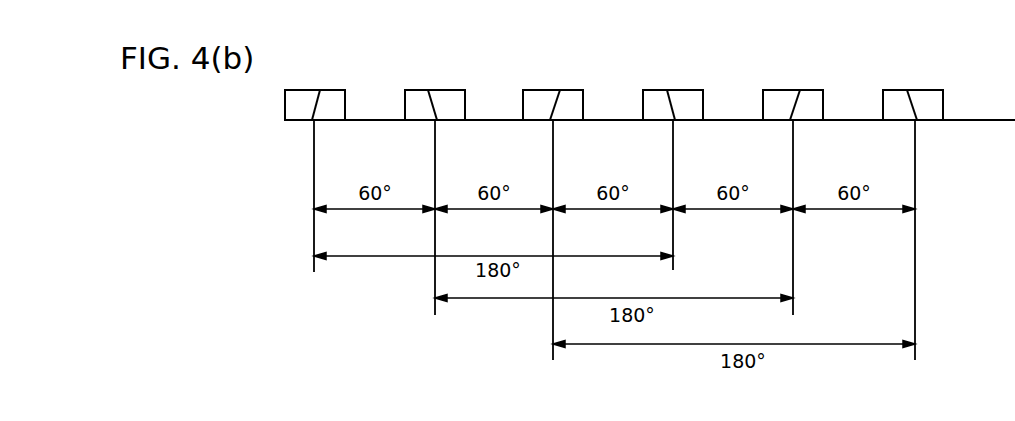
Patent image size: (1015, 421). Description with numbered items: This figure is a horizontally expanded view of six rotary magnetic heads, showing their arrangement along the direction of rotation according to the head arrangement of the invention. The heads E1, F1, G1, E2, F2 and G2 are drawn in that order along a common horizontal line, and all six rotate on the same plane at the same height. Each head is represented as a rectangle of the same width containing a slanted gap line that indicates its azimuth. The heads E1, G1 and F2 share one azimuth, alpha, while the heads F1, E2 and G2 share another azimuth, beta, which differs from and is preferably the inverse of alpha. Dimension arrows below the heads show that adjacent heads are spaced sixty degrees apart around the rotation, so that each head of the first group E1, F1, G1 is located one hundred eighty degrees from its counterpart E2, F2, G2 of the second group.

The rotary magnetic head E1 is at (307, 90).
The rotary magnetic head F1 is at (420, 90).
The rotary magnetic head G1 is at (545, 90).
The rotary magnetic head E2 is at (663, 90).
The rotary magnetic head F2 is at (785, 90).
The rotary magnetic head G2 is at (903, 90).